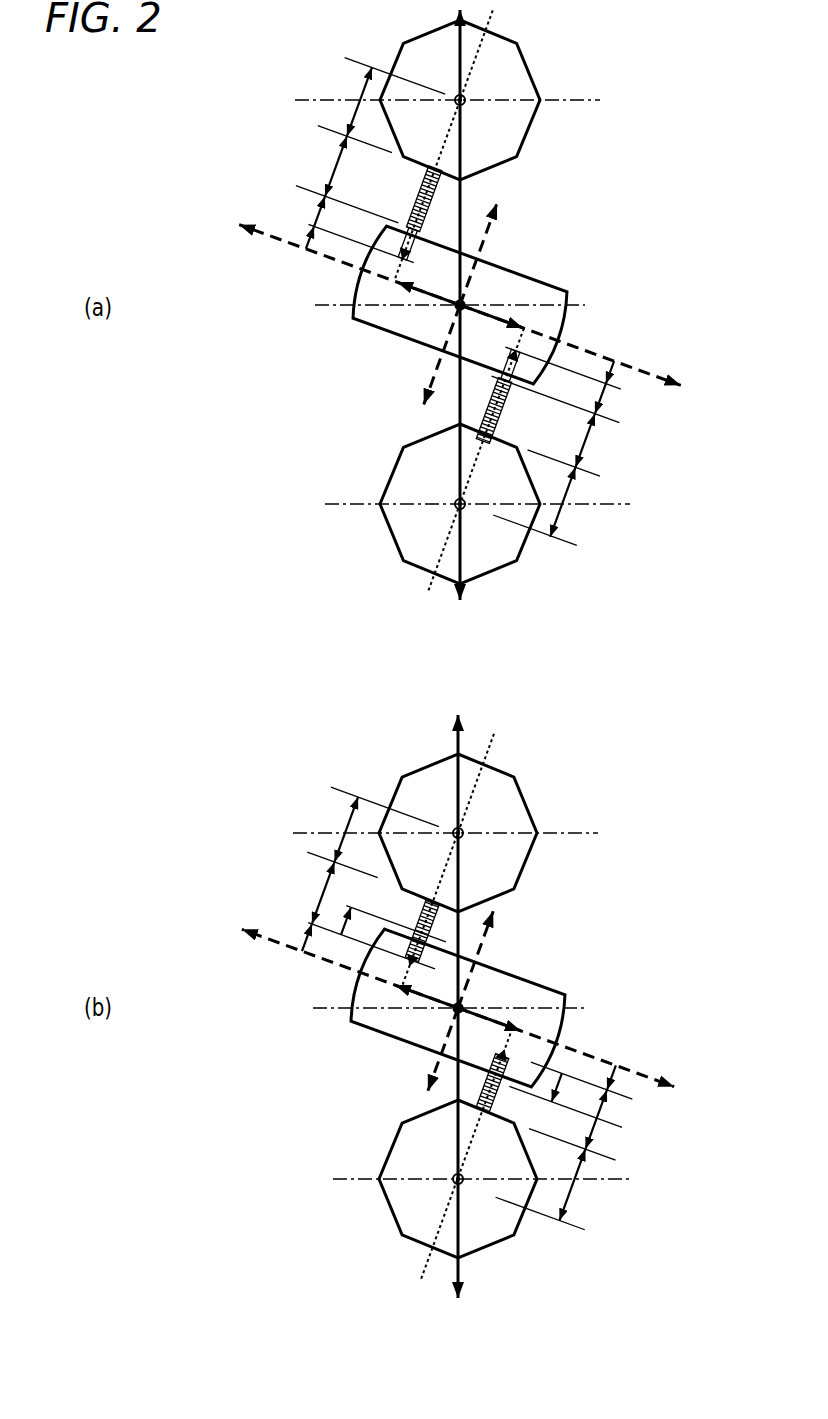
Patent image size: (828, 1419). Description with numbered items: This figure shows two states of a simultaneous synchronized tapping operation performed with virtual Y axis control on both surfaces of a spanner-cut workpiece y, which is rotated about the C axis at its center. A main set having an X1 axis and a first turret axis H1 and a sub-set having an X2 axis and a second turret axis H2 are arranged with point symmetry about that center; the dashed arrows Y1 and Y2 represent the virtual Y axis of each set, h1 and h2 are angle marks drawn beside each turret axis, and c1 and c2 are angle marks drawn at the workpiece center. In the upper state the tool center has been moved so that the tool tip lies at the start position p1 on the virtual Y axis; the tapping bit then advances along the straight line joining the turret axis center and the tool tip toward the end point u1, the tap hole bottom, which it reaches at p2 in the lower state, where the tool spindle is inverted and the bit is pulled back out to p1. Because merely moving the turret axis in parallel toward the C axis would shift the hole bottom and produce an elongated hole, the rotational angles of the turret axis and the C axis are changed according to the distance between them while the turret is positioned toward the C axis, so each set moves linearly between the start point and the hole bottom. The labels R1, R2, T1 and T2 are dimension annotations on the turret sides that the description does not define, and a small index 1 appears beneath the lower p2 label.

The radius of first wheel R1 is at (376, 474).
The radius of second wheel R2 is at (552, 837).
The first rod length T1 is at (314, 530).
The second rod length T2 is at (583, 778).
The synchronized tapping start position p1 is at (459, 656).
The hole bottom position p2 is at (403, 257).
The end point position of tap hole bottom u1 is at (468, 663).
The wheel steering angle h1 is at (477, 45).
The wheel steering angle h2 is at (476, 786).
The first turret axis H1 is at (443, 90).
The second turret axis H2 is at (478, 512).
The C1 axis c1 is at (474, 236).
The body heading angle c2 is at (465, 922).
The X1 axis X1 is at (494, 504).
The X2 axis X2 is at (430, 819).
The virtual Y axis Y1 is at (333, 609).
The virtual Y axis Y2 is at (578, 696).
The body y is at (421, 298).
The attachment point index 1 is at (603, 1047).